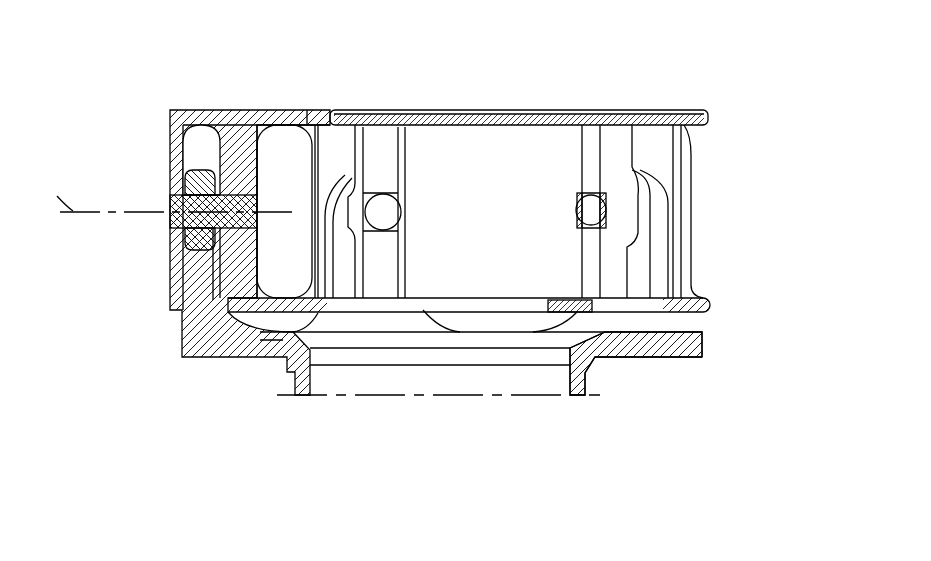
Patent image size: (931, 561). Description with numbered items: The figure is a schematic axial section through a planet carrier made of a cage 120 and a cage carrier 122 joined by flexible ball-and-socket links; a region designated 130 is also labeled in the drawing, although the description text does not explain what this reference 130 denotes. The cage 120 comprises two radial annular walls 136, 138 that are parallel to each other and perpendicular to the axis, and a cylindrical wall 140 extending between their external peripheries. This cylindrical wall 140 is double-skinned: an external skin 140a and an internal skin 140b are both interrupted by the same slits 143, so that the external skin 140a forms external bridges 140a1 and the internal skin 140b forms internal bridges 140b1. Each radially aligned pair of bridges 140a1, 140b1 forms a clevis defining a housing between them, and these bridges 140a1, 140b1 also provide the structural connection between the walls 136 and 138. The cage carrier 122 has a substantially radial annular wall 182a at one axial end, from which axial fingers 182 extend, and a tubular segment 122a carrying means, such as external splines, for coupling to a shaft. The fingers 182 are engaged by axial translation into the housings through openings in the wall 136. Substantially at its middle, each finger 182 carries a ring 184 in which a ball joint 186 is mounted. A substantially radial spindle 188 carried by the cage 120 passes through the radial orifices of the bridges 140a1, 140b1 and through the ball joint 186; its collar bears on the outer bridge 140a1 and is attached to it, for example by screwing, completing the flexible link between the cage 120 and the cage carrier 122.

The cage 120 is at (680, 90).
The cage carrier 122 is at (603, 388).
The tubular segment 122a is at (303, 397).
The housing 130 is at (697, 158).
The radial annular wall 136 is at (700, 312).
The radial annular wall 138 is at (608, 123).
The cylindrical wall 140 is at (690, 199).
The external skin 140a is at (442, 217).
The external bridge 140a1 is at (333, 157).
The internal skin 140b is at (398, 188).
The internal bridge 140b1 is at (237, 137).
The slit 143 is at (517, 225).
The finger 182 is at (198, 292).
The radial annular wall 182a is at (690, 353).
The ring 184 is at (170, 218).
The ball joint 186 is at (200, 178).
The spindle 188 is at (185, 203).